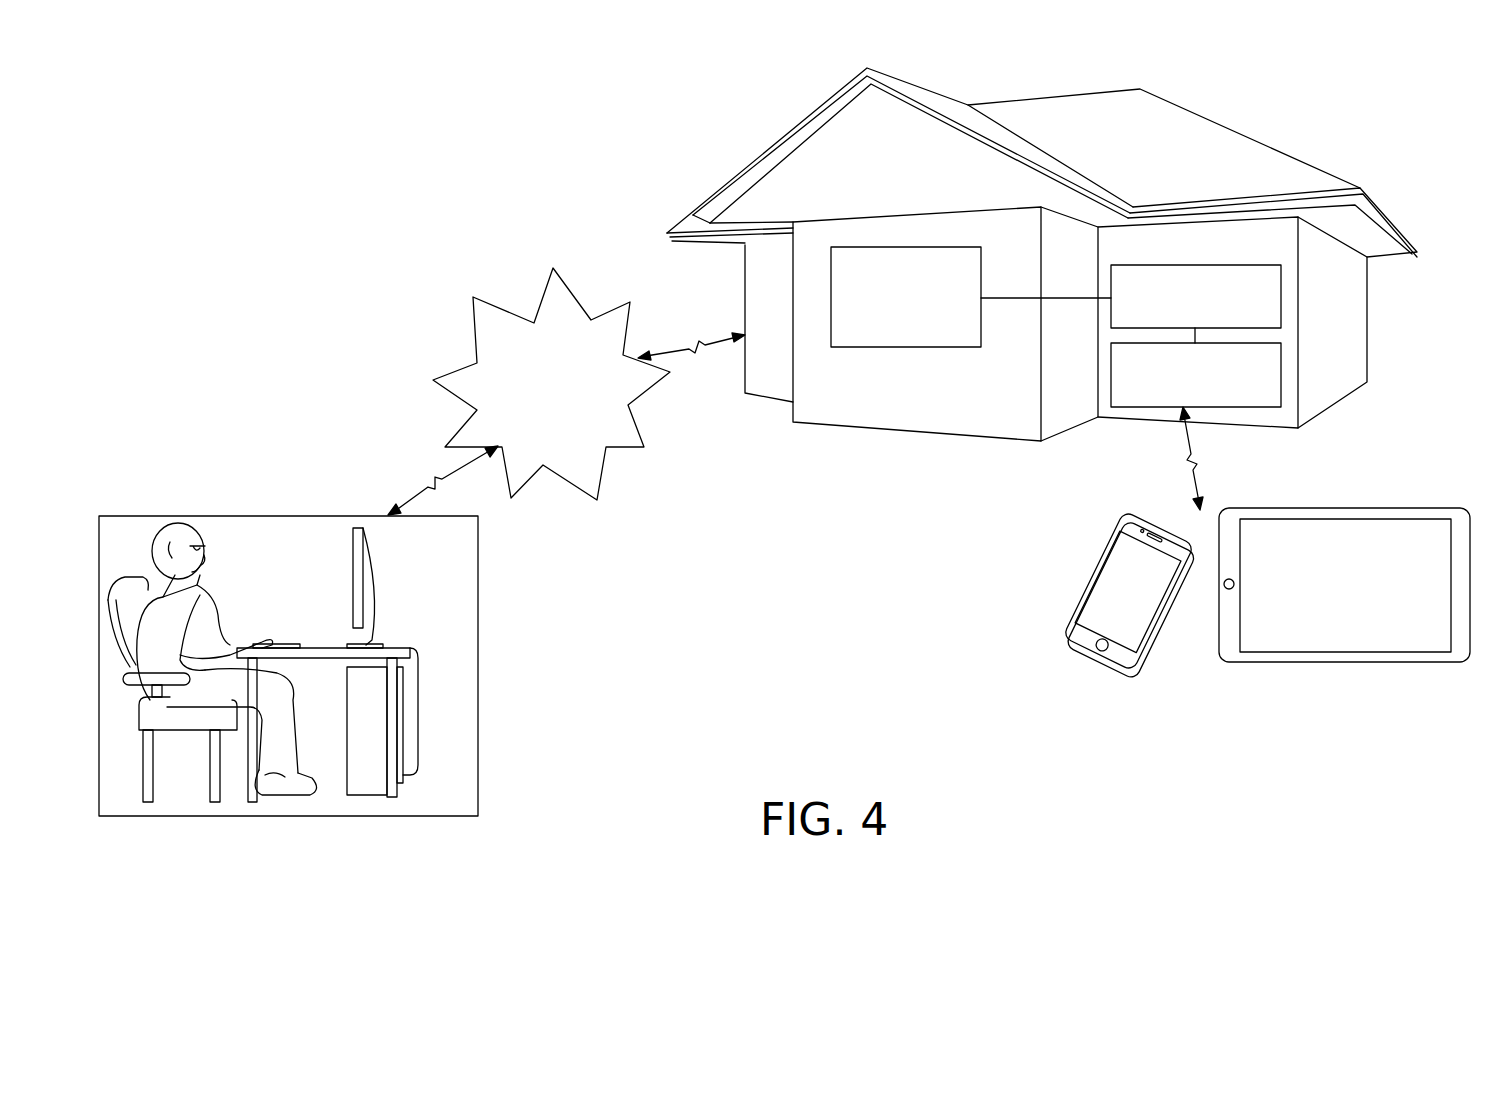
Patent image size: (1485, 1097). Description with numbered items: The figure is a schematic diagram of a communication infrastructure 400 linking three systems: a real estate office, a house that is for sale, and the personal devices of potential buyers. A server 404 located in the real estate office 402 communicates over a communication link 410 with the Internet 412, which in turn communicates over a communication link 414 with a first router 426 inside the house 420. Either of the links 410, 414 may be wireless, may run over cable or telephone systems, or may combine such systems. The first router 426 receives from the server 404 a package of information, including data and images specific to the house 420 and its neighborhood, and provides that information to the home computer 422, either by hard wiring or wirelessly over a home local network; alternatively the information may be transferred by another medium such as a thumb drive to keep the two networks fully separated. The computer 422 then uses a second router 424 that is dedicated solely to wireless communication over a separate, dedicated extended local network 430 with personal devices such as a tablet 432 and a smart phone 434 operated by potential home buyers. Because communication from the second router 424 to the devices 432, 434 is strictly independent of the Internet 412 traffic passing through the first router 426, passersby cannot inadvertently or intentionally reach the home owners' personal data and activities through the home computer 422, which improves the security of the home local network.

The system 400 is at (265, 178).
The real estate office 402 is at (258, 462).
The server 404 is at (360, 727).
The communication link 410 is at (417, 490).
The Internet 412 is at (507, 310).
The communication link 414 is at (675, 343).
The house 420 is at (1300, 160).
The home computer 422 is at (1281, 295).
The second router 424 is at (1281, 374).
The first router 426 is at (928, 347).
The extended local network 430 is at (1198, 473).
The tablet 432 is at (1383, 530).
The smart phone 434 is at (1112, 596).